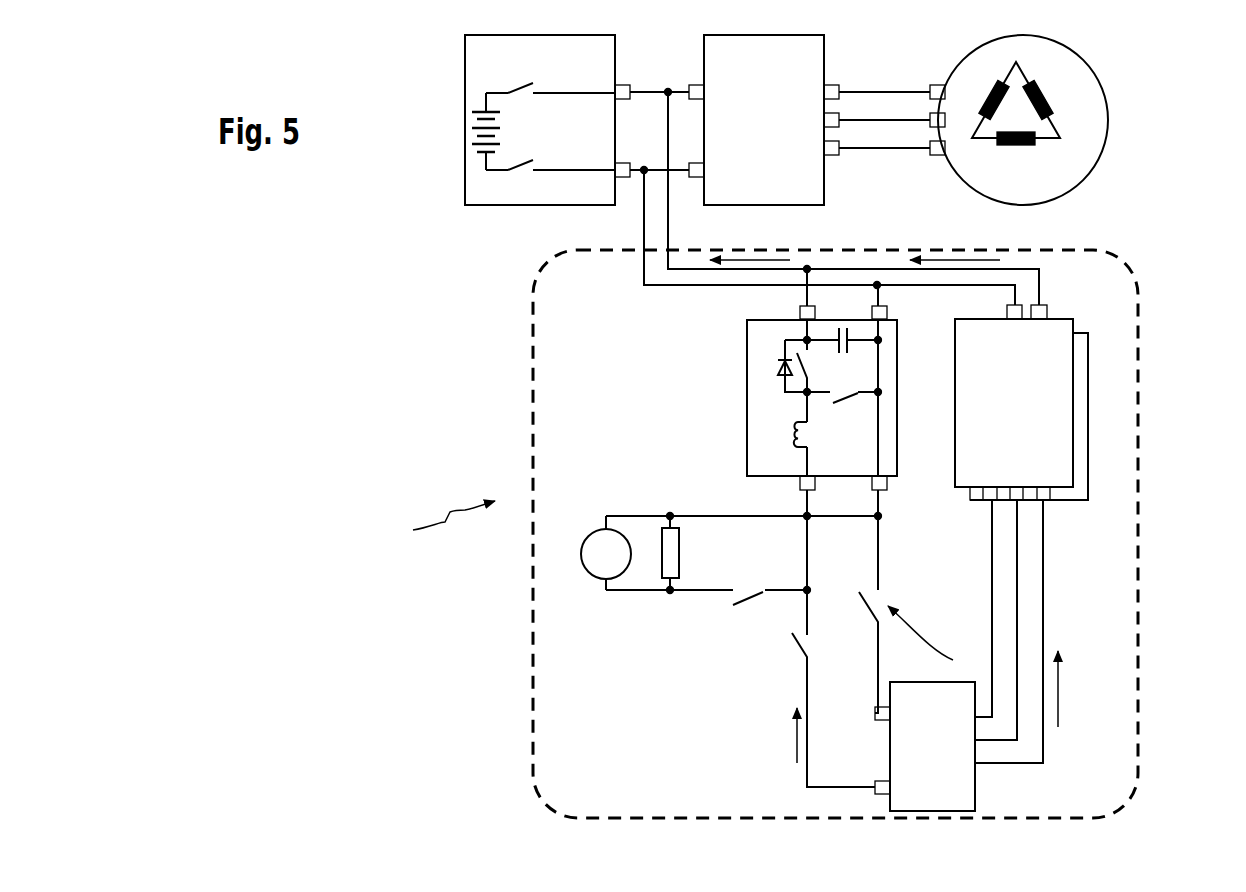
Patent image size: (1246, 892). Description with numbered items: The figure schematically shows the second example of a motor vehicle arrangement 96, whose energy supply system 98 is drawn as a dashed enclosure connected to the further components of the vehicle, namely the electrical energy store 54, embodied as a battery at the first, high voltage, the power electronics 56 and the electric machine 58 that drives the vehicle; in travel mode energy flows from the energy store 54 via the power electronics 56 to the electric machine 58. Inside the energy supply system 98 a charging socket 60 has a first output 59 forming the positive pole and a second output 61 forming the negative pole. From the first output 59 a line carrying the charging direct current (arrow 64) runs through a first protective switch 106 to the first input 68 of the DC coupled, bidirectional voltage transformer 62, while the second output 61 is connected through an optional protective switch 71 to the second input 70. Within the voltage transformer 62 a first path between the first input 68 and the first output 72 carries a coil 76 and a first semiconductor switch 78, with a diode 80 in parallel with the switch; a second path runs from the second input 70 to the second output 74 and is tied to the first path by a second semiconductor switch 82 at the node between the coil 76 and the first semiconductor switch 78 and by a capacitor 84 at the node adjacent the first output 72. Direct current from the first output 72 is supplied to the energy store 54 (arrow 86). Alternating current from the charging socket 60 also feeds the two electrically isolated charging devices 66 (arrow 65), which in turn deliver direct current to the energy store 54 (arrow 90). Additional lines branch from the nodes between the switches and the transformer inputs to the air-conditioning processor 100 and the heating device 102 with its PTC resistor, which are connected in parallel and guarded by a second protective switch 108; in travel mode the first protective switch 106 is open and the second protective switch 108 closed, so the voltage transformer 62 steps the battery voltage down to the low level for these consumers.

The electrical energy store 54 is at (480, 206).
The power electronics 56 is at (785, 206).
The electric machine 58 is at (1090, 172).
The first output 59 is at (875, 787).
The charging socket 60 is at (975, 780).
The second output 61 is at (875, 713).
The voltage transformer 62 is at (747, 448).
The arrow 64 is at (795, 738).
The arrow 65 is at (1060, 677).
The charging devices 66 is at (955, 455).
The first input 68 is at (800, 483).
The second input 70 is at (887, 483).
The protective switch 71 is at (920, 652).
The first output 72 is at (800, 311).
The second output 74 is at (887, 312).
The coil 76 is at (805, 434).
The first semiconductor switch 78 is at (810, 363).
The diode 80 is at (778, 368).
The second semiconductor switch 82 is at (834, 402).
The capacitor 84 is at (845, 300).
The arrow 86 is at (748, 258).
The arrow 90 is at (940, 258).
The motor vehicle arrangement 96 is at (442, 528).
The energy supply system 98 is at (1128, 272).
The air-conditioning processor 100 is at (583, 545).
The heating device 102 is at (680, 555).
The first protective switch 106 is at (793, 650).
The second protective switch 108 is at (742, 598).